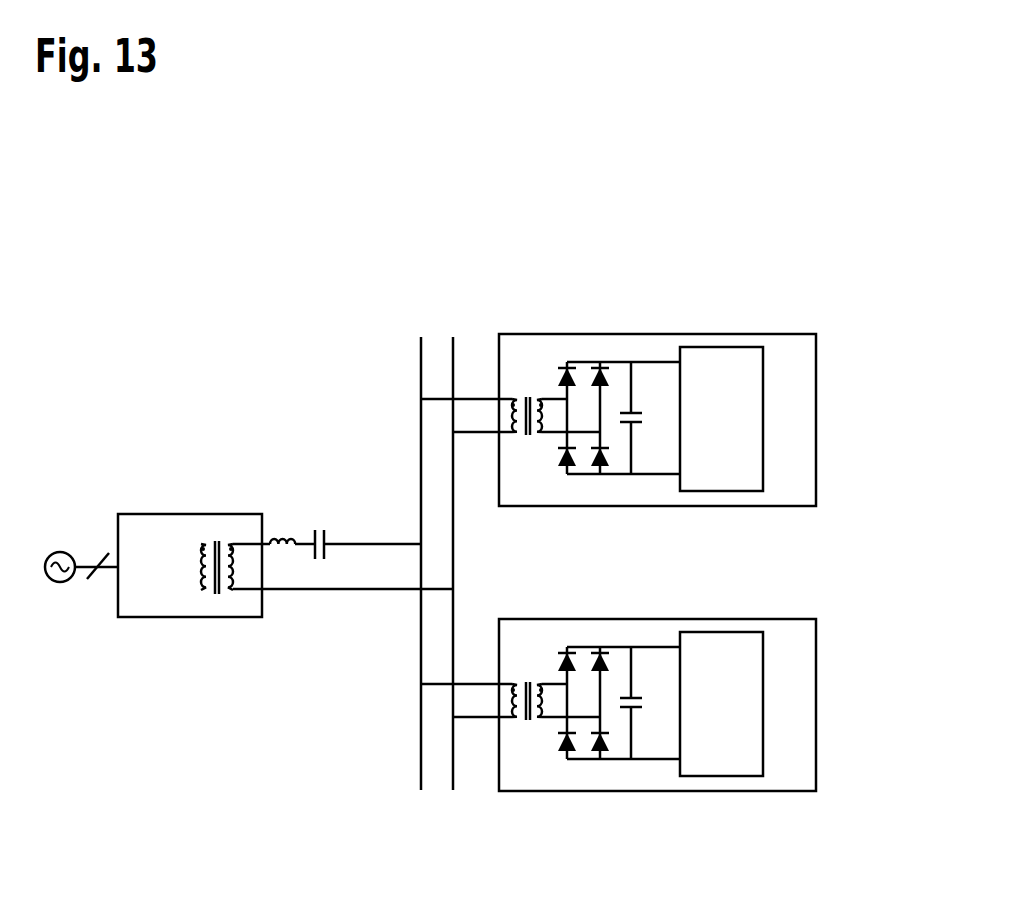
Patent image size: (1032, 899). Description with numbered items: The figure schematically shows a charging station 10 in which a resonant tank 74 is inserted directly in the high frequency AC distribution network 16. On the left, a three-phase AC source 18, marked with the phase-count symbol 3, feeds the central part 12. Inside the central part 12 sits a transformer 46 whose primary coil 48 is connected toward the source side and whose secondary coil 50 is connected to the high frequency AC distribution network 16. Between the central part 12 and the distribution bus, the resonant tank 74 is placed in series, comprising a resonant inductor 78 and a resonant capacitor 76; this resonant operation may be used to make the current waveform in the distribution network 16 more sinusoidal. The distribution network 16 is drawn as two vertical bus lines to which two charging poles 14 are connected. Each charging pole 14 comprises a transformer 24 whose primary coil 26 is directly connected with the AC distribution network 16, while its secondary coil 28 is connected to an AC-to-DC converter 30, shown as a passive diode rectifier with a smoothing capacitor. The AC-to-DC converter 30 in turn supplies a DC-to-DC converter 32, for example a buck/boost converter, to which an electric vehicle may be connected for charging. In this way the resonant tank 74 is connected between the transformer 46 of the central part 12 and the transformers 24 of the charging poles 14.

The charging station 10 is at (779, 180).
The central part 12 is at (138, 514).
The charging pole 14 is at (816, 420).
The high frequency AC distribution network 16 is at (392, 612).
The AC voltage source 18 is at (62, 550).
The three-phase indicator 3 is at (97, 556).
The transformer 24 is at (618, 563).
The primary coil 26 is at (618, 563).
The secondary coil 28 is at (513, 397).
The AC-to-DC converter 30 is at (618, 563).
The DC-to-DC converter 32 is at (618, 563).
The transformer 46 is at (205, 600).
The primary coil 48 is at (209, 544).
The secondary coil 50 is at (224, 594).
The resonant tank 74 is at (334, 425).
The resonant capacitor 76 is at (327, 538).
The resonant inductor 78 is at (288, 540).